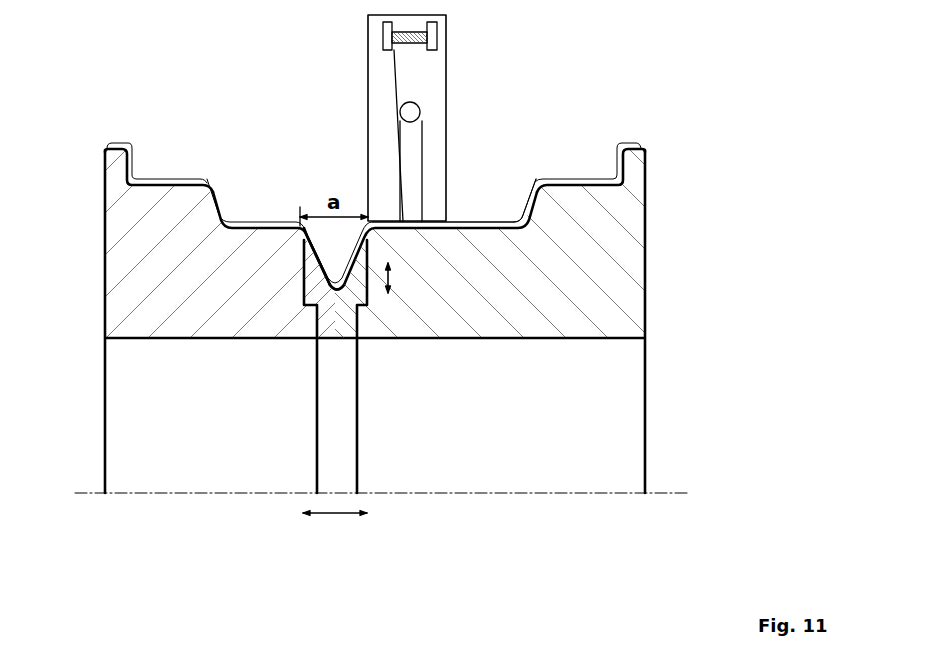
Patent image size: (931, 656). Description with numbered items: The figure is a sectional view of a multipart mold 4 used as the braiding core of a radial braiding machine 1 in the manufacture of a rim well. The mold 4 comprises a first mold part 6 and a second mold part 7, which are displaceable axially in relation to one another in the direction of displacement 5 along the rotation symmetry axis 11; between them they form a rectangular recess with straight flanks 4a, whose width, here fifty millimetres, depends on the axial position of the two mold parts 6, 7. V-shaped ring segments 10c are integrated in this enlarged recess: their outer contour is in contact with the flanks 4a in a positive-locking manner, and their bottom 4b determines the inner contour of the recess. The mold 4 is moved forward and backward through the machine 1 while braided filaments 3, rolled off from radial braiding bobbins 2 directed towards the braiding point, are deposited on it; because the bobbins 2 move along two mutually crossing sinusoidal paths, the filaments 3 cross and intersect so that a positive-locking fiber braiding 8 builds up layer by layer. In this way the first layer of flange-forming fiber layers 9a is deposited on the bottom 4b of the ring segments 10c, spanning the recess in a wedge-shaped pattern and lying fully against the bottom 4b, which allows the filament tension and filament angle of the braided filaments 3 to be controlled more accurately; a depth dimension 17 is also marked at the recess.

The radial braiding machine 1 is at (448, 70).
The radial braiding bobbins 2 is at (383, 37).
The braided filaments 3 is at (397, 83).
The multipart mold 4 is at (128, 241).
The first mold part 6 is at (128, 241).
The second mold part 7 is at (626, 222).
The fiber braiding 8 is at (567, 176).
The flange-forming fiber layers 9a is at (567, 176).
The flanks 4a is at (301, 273).
The bottom 4b is at (332, 288).
The direction of displacement 5 is at (335, 532).
The V-shaped ring segments 10c is at (361, 351).
The rotation symmetry axis 11 is at (688, 493).
The groove depth 17 is at (407, 279).